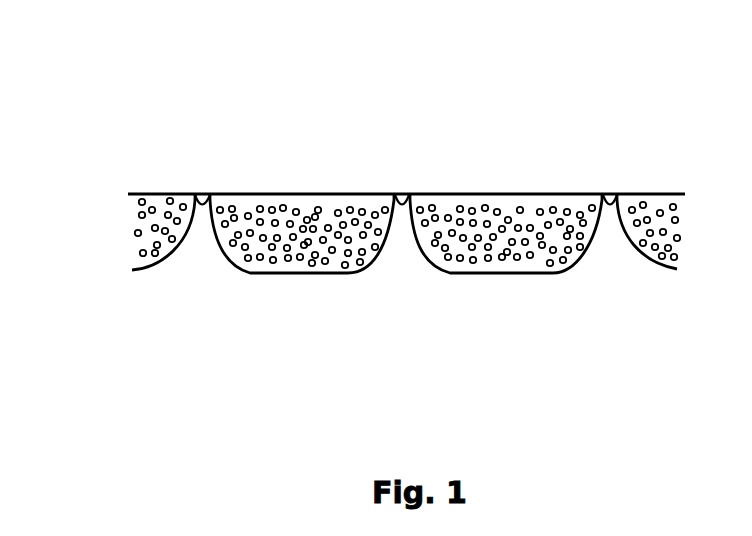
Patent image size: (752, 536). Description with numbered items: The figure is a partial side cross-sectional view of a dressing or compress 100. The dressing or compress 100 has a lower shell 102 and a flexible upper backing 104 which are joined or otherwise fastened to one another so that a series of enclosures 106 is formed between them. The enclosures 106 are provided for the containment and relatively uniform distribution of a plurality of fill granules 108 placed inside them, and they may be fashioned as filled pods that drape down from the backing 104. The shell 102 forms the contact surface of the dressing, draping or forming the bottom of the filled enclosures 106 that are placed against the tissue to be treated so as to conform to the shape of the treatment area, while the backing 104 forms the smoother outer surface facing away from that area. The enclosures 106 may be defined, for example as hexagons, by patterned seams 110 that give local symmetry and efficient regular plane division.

The dressing or compress 100 is at (545, 36).
The lower shell 102 is at (120, 272).
The flexible upper backing 104 is at (122, 198).
The enclosures 106 is at (343, 280).
The fill granules 108 is at (685, 238).
The patterned seams 110 is at (202, 185).